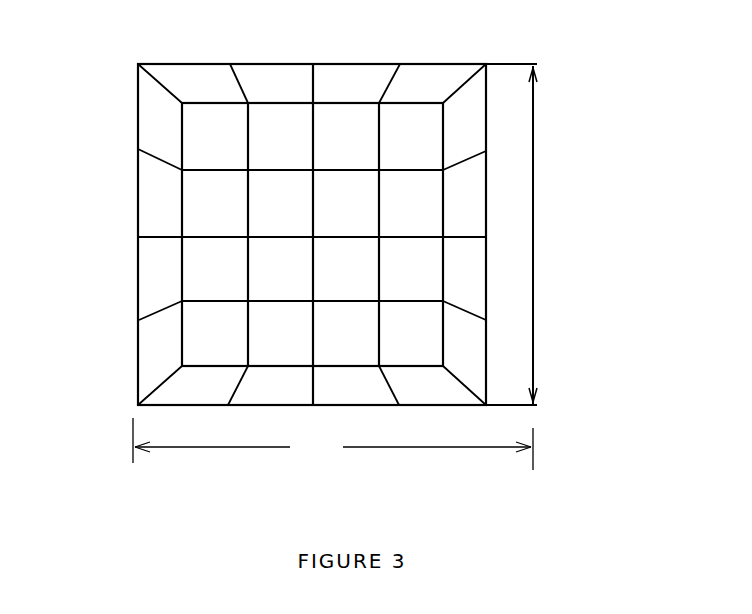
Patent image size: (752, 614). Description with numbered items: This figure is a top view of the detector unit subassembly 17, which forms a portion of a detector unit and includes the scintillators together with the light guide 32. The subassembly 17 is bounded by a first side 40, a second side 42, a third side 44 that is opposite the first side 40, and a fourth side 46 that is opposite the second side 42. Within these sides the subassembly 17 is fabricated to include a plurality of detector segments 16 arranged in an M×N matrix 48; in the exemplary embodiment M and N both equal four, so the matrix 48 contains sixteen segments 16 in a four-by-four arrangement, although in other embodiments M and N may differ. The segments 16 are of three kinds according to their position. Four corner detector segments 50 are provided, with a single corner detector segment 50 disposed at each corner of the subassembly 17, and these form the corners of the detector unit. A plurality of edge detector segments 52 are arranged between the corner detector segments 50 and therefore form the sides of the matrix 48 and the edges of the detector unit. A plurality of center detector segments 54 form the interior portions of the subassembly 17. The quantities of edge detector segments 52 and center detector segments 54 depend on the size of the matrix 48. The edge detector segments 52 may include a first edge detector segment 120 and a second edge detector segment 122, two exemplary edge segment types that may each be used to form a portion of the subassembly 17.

The detector segment 16 is at (263, 78).
The detector unit subassembly 17 is at (627, 32).
The light guide 32 is at (190, 80).
The first side 40 is at (297, 0).
The second side 42 is at (472, 265).
The third side 44 is at (333, 456).
The fourth side 46 is at (80, 234).
The M×N matrix 48 is at (557, 422).
The corner detector segment 50 is at (312, 234).
The edge detector segment 52 is at (312, 234).
The center detector segment 54 is at (313, 235).
The first edge detector segment 120 is at (473, 203).
The second edge detector segment 122 is at (577, 213).